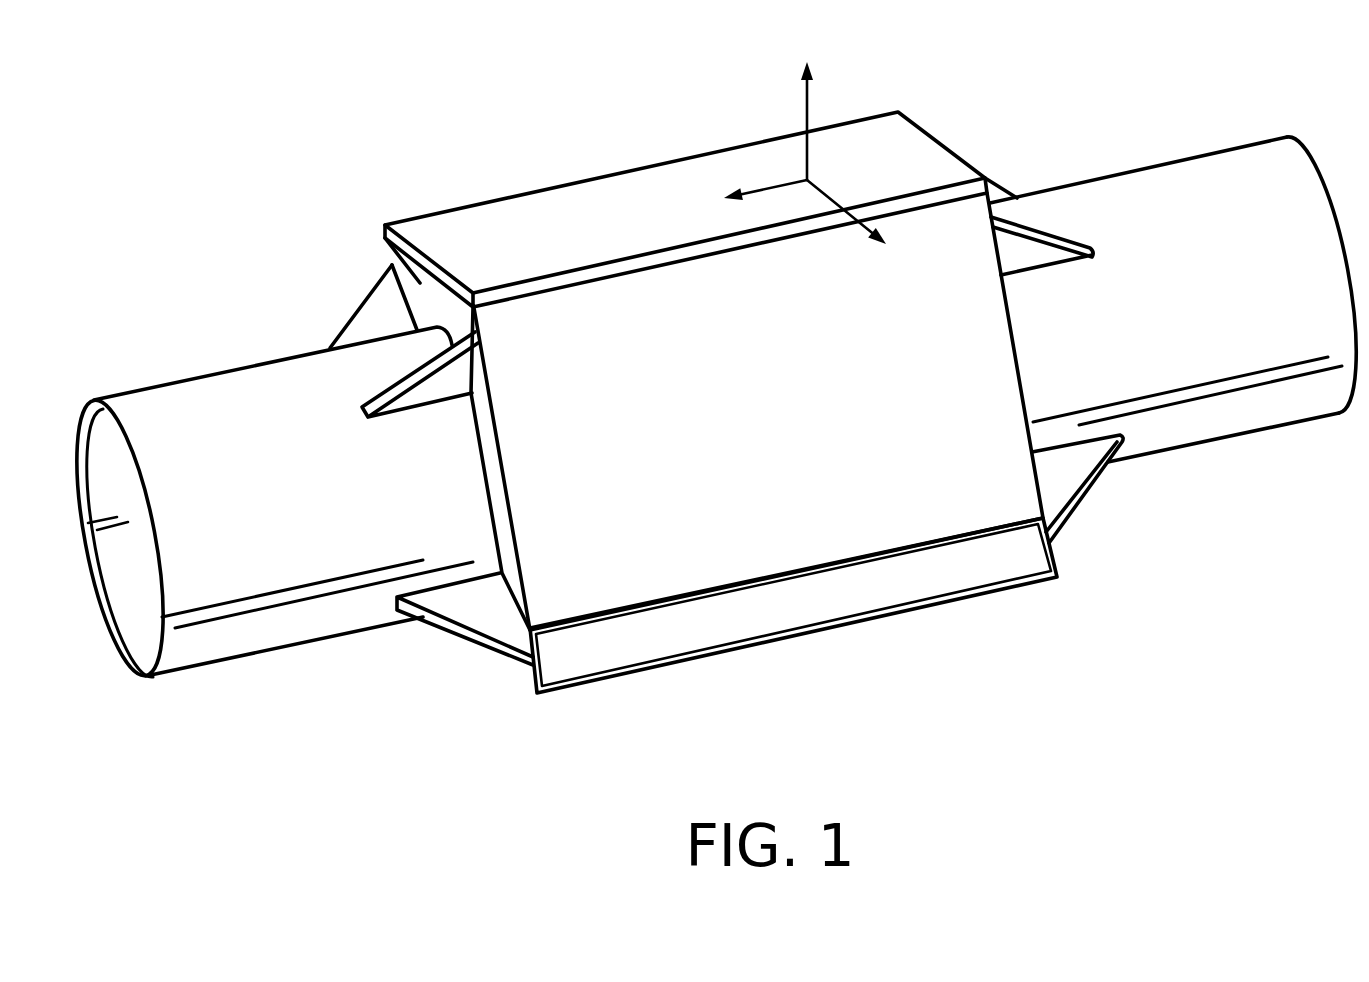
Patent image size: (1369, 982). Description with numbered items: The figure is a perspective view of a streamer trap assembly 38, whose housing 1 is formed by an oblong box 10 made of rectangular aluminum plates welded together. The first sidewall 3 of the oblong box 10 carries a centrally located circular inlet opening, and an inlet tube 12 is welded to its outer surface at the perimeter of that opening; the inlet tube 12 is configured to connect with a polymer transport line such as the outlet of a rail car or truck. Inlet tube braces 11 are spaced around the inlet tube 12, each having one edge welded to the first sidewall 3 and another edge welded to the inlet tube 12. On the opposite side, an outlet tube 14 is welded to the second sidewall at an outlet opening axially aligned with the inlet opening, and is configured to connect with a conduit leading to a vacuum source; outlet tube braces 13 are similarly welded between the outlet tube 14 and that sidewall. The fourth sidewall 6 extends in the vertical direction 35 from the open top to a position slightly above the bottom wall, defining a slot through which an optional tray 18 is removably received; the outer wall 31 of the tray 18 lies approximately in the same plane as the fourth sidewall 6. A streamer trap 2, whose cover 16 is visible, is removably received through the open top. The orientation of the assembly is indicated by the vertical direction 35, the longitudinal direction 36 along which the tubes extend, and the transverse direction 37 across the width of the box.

The housing 1 is at (437, 648).
The streamer trap 2 is at (549, 157).
The first sidewall 3 is at (392, 263).
The fourth sidewall 6 is at (553, 332).
The oblong box 10 is at (768, 436).
The inlet tube brace 11 is at (375, 318).
The inlet tube 12 is at (228, 665).
The outlet tube brace 13 is at (1070, 478).
The outlet tube 14 is at (1253, 434).
The cover 16 is at (643, 205).
The tray 18 is at (793, 629).
The outer wall 31 is at (780, 615).
The vertical direction 35 is at (804, 103).
The longitudinal direction 36 is at (743, 202).
The transverse direction 37 is at (865, 222).
The streamer trap assembly 38 is at (230, 158).